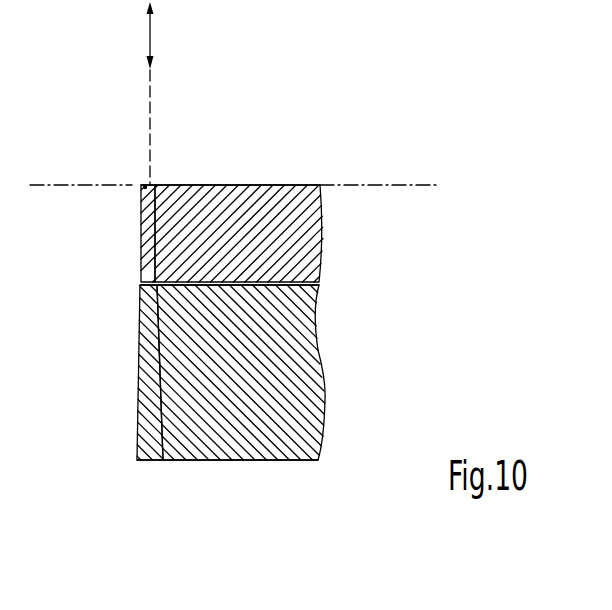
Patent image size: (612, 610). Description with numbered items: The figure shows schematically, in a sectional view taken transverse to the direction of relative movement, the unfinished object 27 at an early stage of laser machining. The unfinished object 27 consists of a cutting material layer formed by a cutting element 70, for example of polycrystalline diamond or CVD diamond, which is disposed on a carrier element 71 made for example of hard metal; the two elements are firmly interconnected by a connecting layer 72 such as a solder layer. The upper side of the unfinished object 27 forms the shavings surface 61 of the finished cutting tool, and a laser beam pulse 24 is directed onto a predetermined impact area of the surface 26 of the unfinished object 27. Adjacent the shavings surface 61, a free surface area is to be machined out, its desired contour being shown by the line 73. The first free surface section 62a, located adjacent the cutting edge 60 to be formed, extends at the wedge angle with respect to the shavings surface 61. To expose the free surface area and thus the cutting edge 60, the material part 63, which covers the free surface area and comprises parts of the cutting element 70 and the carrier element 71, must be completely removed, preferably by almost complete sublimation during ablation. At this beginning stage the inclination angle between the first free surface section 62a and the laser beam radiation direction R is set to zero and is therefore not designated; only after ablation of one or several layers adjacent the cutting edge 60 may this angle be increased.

The laser beam radiation direction R is at (150, 35).
The laser beam impulse 24 is at (149, 85).
The surface 26 is at (310, 182).
The unfinished object 27 is at (350, 340).
The cutting edge 60 is at (156, 185).
The shavings surface 61 is at (255, 180).
The first free surface section 62a is at (143, 187).
The material part 63 is at (160, 460).
The cutting element 70 is at (312, 227).
The carrier element 71 is at (316, 417).
The connecting layer 72 is at (318, 285).
The line 73 is at (163, 435).